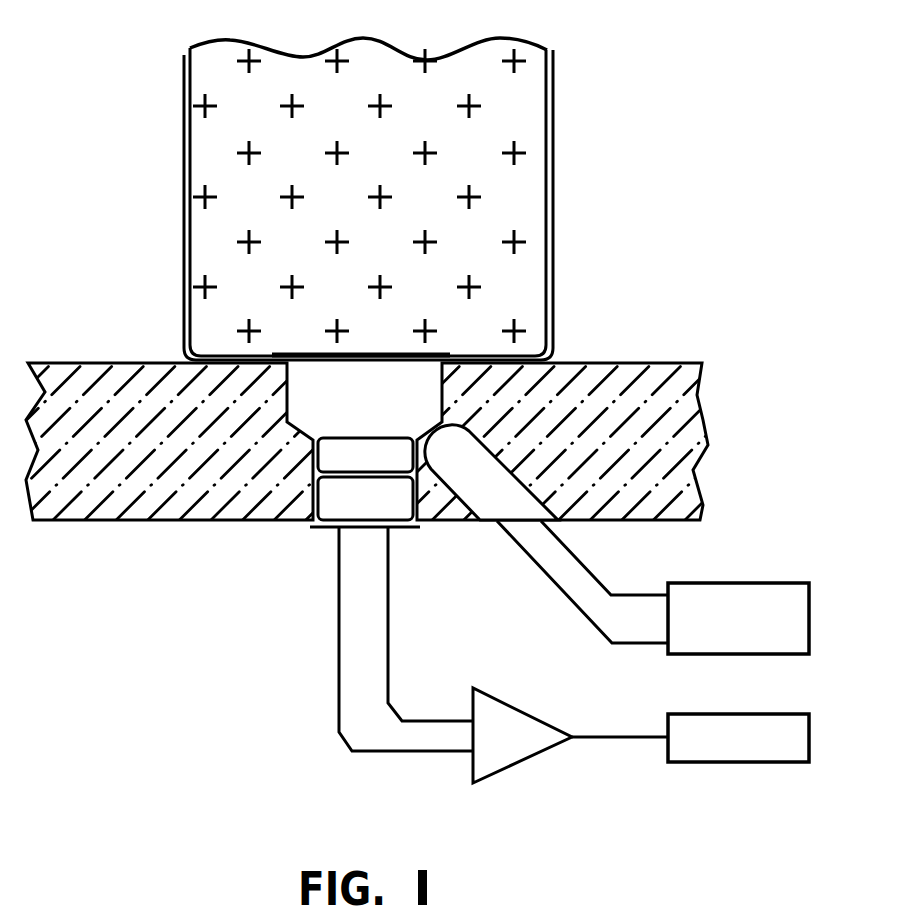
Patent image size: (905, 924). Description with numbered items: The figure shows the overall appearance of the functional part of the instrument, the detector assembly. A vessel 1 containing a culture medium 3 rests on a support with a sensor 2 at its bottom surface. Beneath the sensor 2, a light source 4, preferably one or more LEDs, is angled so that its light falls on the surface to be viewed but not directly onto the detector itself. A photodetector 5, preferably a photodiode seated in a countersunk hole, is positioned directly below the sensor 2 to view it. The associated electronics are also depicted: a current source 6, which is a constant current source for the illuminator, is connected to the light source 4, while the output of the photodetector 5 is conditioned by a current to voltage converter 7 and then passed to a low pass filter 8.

The vessel 1 is at (556, 150).
The sensor 2 is at (455, 349).
The culture medium 3 is at (268, 180).
The light source 4 is at (463, 472).
The photodetector 5 is at (337, 505).
The current source 6 is at (809, 613).
The current to voltage converter 7 is at (522, 764).
The low pass filter 8 is at (809, 738).